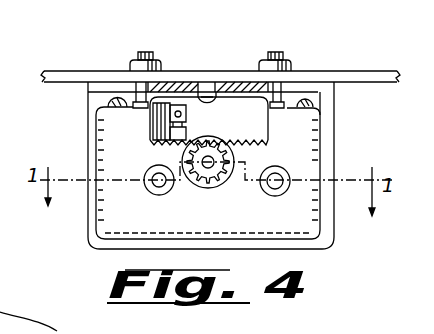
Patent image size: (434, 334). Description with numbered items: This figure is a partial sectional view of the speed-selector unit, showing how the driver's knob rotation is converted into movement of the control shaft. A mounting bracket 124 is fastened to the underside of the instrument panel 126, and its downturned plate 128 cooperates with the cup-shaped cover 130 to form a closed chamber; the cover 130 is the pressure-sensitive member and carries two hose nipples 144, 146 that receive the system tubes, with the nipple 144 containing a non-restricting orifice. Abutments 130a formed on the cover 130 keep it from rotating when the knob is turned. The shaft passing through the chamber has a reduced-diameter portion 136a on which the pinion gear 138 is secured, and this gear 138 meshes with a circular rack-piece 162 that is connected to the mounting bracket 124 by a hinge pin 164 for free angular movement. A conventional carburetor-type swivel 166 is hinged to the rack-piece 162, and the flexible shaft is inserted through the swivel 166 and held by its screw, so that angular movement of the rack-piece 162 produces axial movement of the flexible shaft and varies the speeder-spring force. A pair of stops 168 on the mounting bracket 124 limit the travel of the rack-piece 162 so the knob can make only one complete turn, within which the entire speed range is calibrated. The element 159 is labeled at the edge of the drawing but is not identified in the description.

The mounting plate 126 is at (349, 80).
The bolts 168 is at (134, 84).
The screw recess 164 is at (208, 106).
The housing wall 124 is at (87, 88).
The housing bosses 130a is at (113, 98).
The rack member 162 is at (150, 115).
The slide block 166 is at (172, 118).
The housing 130 is at (153, 227).
The housing outer wall 128 is at (86, 237).
The roller 144 is at (153, 187).
The roller 146 is at (308, 148).
The pinion gear 136a is at (198, 180).
The disc 138 is at (227, 182).
The adjacent figure element 159 is at (20, 333).